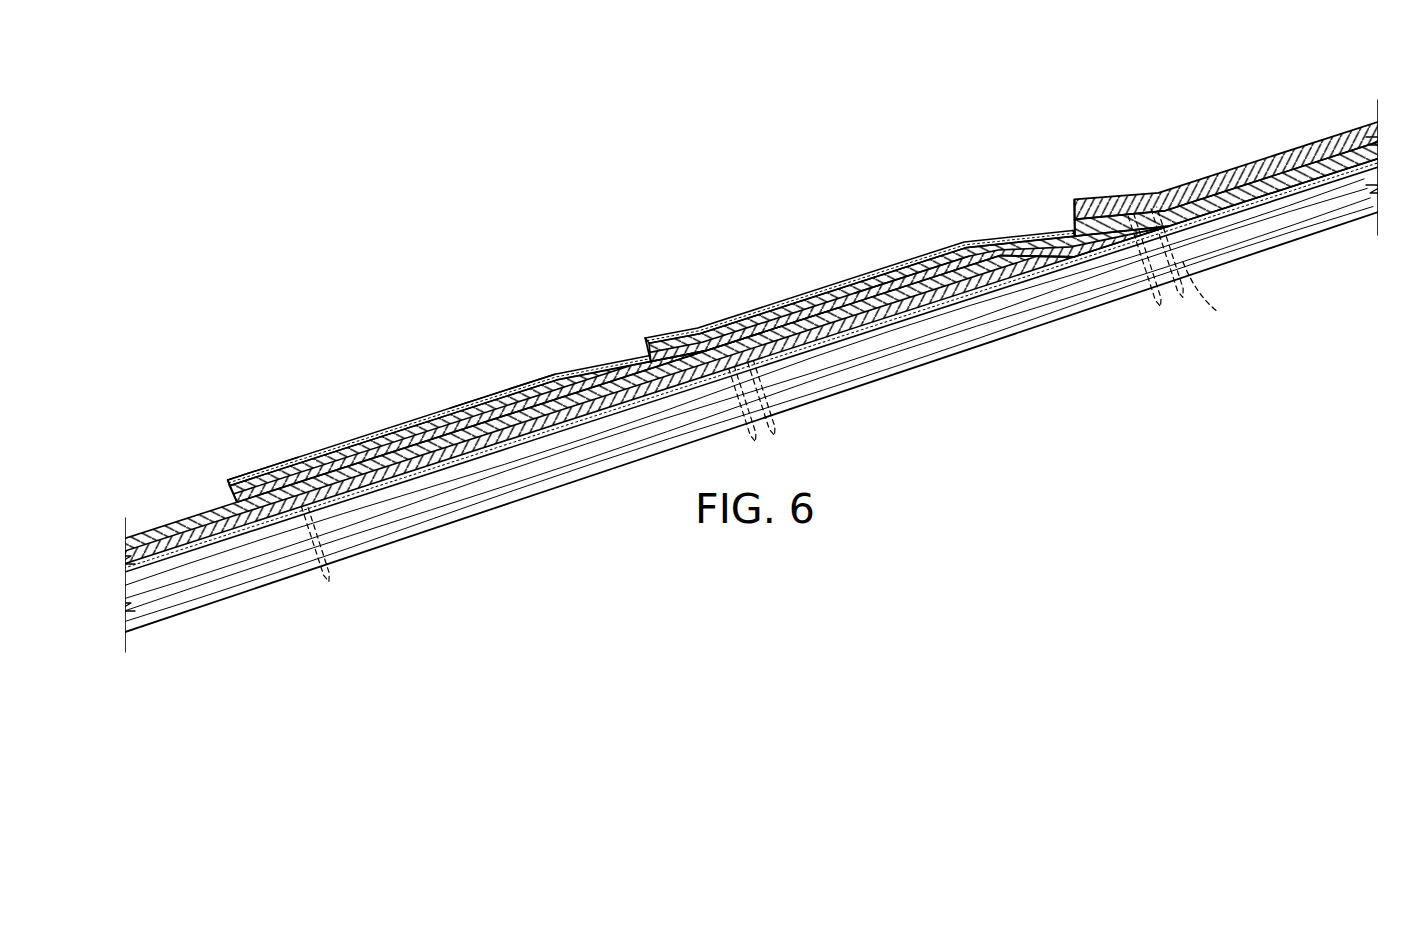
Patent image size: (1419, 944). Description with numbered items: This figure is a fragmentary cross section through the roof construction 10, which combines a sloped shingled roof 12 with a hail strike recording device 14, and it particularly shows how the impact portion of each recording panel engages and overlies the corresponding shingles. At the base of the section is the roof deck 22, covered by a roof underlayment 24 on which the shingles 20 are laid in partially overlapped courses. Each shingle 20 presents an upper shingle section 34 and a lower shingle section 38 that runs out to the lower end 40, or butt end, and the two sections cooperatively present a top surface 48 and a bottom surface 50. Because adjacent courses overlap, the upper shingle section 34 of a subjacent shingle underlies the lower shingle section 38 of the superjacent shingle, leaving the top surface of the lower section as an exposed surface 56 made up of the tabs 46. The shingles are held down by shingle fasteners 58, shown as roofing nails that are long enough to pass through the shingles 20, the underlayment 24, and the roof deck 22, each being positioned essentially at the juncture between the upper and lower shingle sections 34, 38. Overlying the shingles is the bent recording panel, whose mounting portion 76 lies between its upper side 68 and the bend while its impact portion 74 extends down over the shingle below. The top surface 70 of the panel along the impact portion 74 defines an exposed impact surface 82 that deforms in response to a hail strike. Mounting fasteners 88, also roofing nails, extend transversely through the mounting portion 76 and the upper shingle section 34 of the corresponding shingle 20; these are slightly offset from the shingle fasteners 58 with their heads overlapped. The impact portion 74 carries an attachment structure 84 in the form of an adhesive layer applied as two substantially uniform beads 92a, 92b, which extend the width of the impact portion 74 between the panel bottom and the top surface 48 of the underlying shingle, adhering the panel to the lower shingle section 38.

The roof construction 10 is at (252, 82).
The sloped shingled roof 12 is at (259, 150).
The hail strike recording device 14 is at (283, 239).
The shingle 20 is at (1160, 183).
The roof deck 22 is at (220, 574).
The roof underlayment 24 is at (155, 580).
The upper shingle section 34 is at (857, 320).
The lower shingle section 38 is at (387, 485).
The lower end 40 is at (248, 493).
The tab 46 is at (1250, 158).
The top surface 48 is at (1295, 146).
The bottom surface 50 is at (918, 318).
The exposed surface 56 is at (1345, 123).
The shingle fastener 58 is at (1140, 304).
The upper side 68 is at (250, 480).
The top surface 70 is at (350, 438).
The impact portion 74 is at (360, 432).
The mounting portion 76 is at (800, 350).
The exposed impact surface 82 is at (415, 418).
The attachment structure 84 is at (245, 487).
The mounting fastener 88 is at (1214, 310).
The bead 92a is at (505, 408).
The bead 92b is at (290, 468).